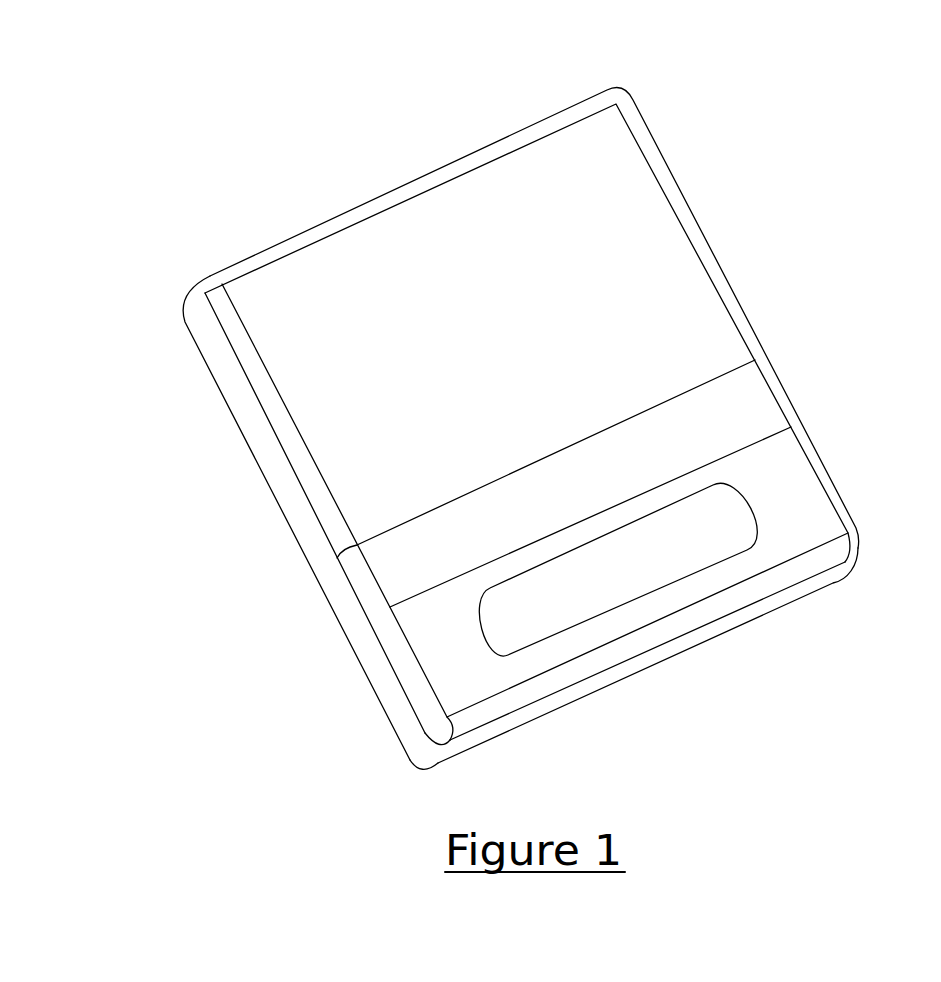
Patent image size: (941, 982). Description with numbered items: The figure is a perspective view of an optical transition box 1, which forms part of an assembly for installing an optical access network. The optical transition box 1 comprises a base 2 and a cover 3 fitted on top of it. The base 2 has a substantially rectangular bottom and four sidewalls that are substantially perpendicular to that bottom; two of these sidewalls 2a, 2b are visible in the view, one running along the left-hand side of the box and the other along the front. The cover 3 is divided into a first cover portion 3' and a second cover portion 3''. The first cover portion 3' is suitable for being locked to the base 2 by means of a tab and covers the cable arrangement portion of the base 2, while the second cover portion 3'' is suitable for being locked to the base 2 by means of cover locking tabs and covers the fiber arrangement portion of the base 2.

The optical transition box 1 is at (235, 181).
The base 2 is at (334, 697).
The sidewall 2a is at (220, 365).
The sidewall 2b is at (753, 612).
The cover 3 is at (567, 381).
The first cover portion 3' is at (569, 354).
The second cover portion 3'' is at (526, 410).